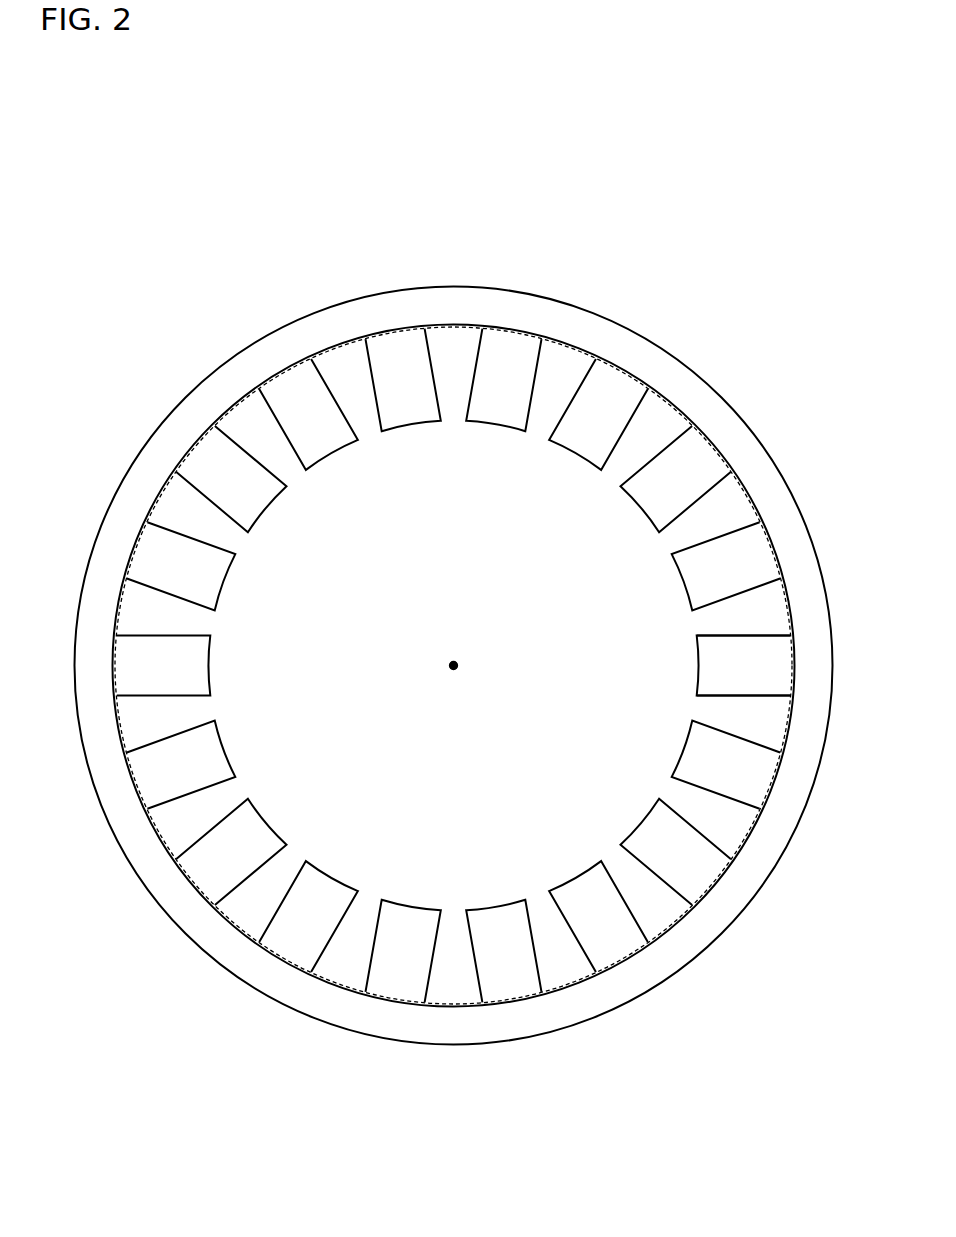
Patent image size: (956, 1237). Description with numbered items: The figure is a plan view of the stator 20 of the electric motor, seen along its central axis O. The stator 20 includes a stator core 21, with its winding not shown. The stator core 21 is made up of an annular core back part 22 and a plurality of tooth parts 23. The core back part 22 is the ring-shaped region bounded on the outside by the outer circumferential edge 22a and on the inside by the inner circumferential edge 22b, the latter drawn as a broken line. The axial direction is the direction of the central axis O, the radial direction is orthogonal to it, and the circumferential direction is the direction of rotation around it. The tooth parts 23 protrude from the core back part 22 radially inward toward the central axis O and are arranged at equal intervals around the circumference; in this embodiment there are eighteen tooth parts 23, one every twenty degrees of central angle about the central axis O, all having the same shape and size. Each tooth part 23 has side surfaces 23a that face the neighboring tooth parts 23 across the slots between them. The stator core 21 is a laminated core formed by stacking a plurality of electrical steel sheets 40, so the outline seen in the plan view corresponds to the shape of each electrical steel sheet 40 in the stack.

The stator 20 is at (757, 150).
The stator core 21 is at (678, 212).
The core back part 22 is at (641, 335).
The outer circumferential edge 22a is at (325, 307).
The inner circumferential edge 22b is at (388, 330).
The tooth part 23 is at (540, 358).
The side surface of tooth 23a is at (503, 378).
The electrical steel sheet 40 is at (225, 380).
The central axis O is at (457, 662).